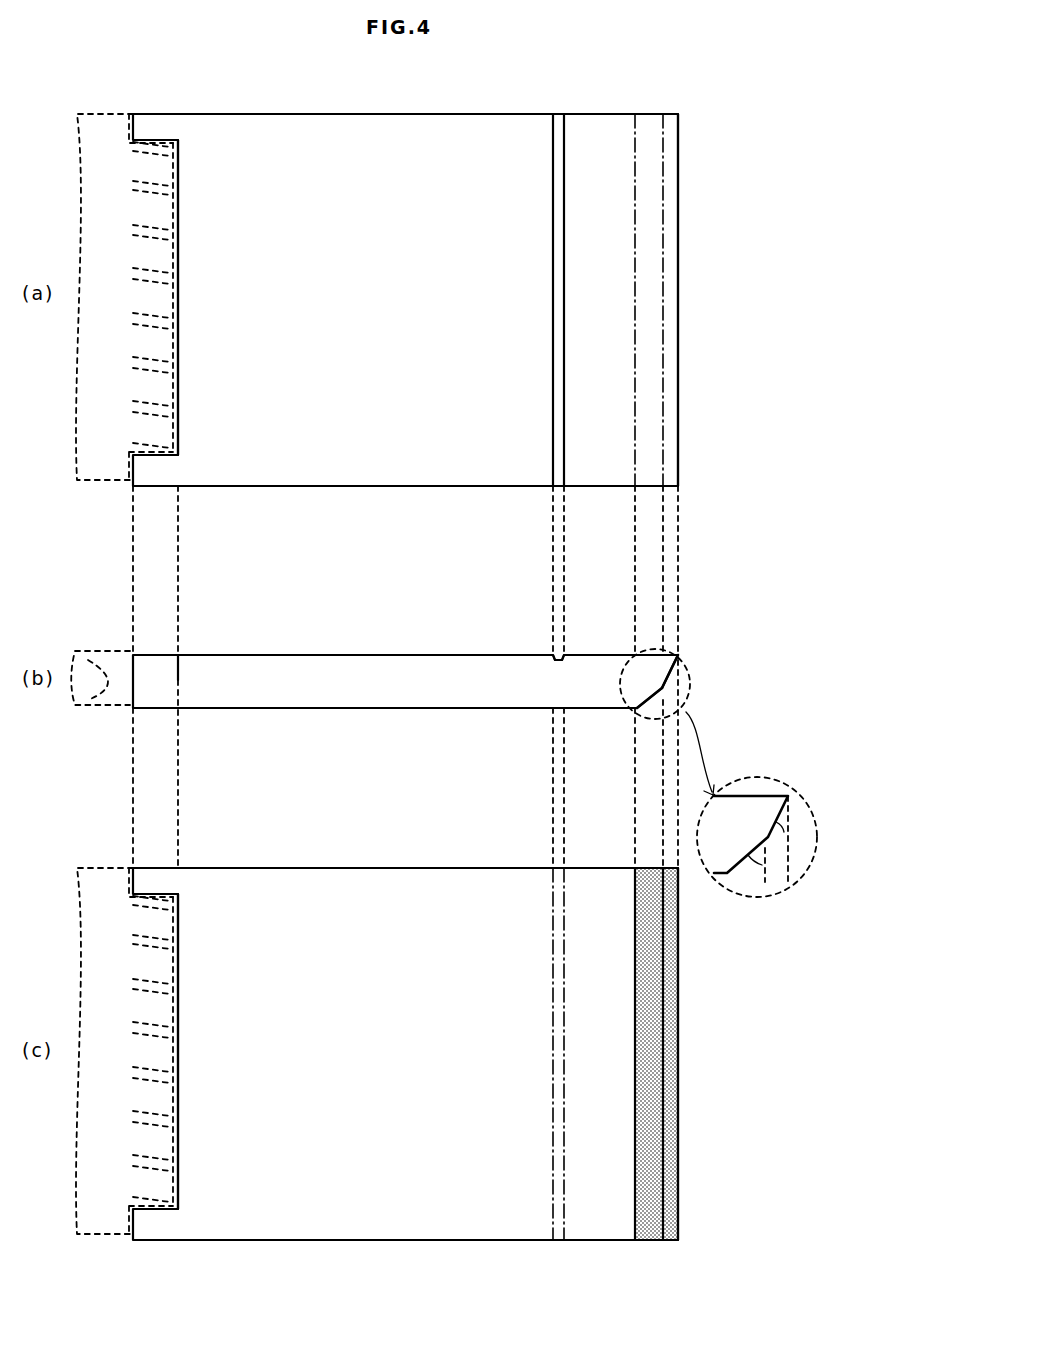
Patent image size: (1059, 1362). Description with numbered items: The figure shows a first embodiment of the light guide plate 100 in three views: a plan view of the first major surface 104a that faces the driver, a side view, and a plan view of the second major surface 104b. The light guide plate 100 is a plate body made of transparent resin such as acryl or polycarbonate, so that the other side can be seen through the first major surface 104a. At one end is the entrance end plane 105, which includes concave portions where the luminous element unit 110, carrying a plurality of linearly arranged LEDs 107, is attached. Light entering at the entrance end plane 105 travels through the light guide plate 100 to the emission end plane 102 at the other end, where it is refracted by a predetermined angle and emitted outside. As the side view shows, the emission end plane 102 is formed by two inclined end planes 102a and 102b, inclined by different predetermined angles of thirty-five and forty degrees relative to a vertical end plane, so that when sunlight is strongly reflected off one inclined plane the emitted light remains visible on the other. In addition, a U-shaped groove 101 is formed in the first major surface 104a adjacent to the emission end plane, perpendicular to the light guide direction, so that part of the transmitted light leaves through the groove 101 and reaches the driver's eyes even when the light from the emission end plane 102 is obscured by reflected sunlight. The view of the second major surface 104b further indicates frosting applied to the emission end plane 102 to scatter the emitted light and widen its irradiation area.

The light guide plate 100 is at (508, 110).
The U-shaped groove 101 is at (570, 114).
The emission end plane 102 is at (728, 677).
The inclined end plane 102a is at (662, 686).
The inclined end plane 102b is at (652, 700).
The first major surface 104a is at (335, 300).
The second major surface 104b is at (345, 708).
The entrance end plane 105 is at (180, 338).
The LEDs 107 is at (184, 170).
The luminous element unit 110 is at (103, 471).